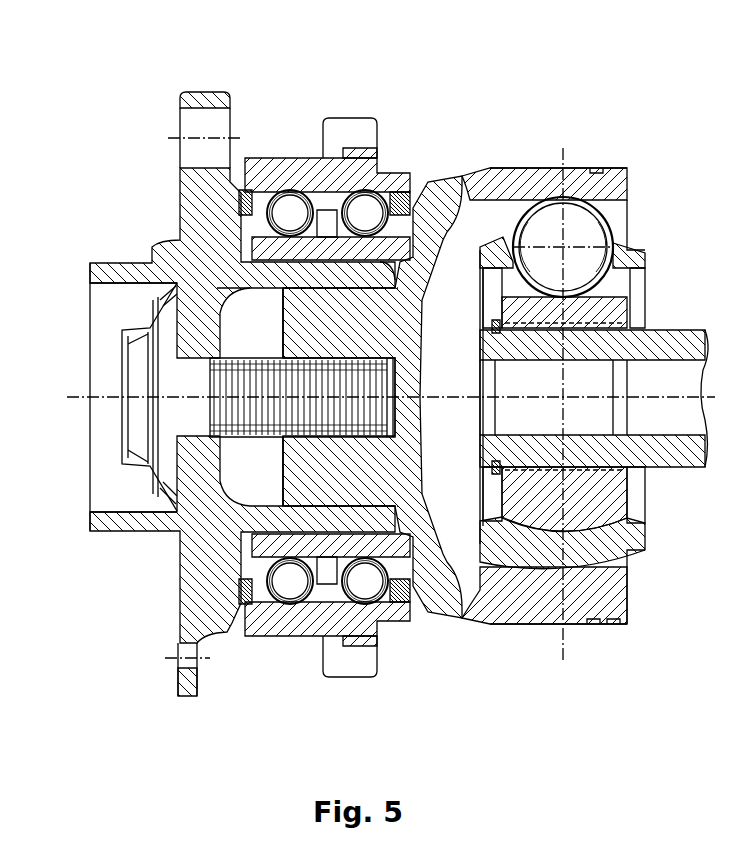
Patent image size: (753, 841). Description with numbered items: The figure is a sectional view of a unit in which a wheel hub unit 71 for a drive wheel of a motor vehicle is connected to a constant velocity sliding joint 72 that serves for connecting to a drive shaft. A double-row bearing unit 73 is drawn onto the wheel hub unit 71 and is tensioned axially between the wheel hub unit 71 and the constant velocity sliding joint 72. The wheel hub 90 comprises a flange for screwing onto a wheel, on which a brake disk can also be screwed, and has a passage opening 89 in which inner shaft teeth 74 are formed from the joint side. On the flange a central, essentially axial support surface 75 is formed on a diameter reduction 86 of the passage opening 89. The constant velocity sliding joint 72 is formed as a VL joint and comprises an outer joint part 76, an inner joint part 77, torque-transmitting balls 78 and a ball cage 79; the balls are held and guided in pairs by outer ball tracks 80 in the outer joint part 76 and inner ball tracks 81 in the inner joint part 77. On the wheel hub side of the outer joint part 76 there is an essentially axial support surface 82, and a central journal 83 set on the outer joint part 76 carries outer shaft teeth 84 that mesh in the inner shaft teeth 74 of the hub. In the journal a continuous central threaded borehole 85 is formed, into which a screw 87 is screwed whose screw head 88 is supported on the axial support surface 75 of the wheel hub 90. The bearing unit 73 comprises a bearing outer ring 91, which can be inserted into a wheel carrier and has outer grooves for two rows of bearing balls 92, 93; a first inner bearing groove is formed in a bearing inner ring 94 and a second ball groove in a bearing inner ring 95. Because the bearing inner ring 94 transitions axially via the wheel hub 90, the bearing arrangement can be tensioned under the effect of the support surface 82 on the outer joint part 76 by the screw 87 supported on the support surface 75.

The wheel hub unit 71 is at (236, 97).
The constant velocity sliding joint 72 is at (584, 132).
The bearing unit 73 is at (376, 97).
The inner shaft teeth 74 is at (268, 302).
The axial support surface 75 is at (178, 284).
The outer joint part 76 is at (592, 188).
The inner joint part 77 is at (597, 313).
The torque-transmitting balls 78 is at (592, 218).
The ball cage 79 is at (645, 255).
The outer ball tracks 80 is at (510, 207).
The inner ball tracks 81 is at (468, 213).
The axial support surface 82 is at (418, 183).
The central journal 83 is at (340, 327).
The outer shaft teeth 84 is at (340, 289).
The central threaded borehole 85 is at (382, 362).
The diameter reduction 86 is at (130, 322).
The screw 87 is at (376, 408).
The screw head 88 is at (158, 470).
The passage opening 89 is at (228, 310).
The wheel hub 90 is at (193, 198).
The bearing outer ring 91 is at (305, 168).
The bearing balls 92 is at (287, 210).
The bearing balls 93 is at (372, 205).
The bearing inner ring 94 is at (392, 285).
The bearing inner ring 95 is at (395, 240).